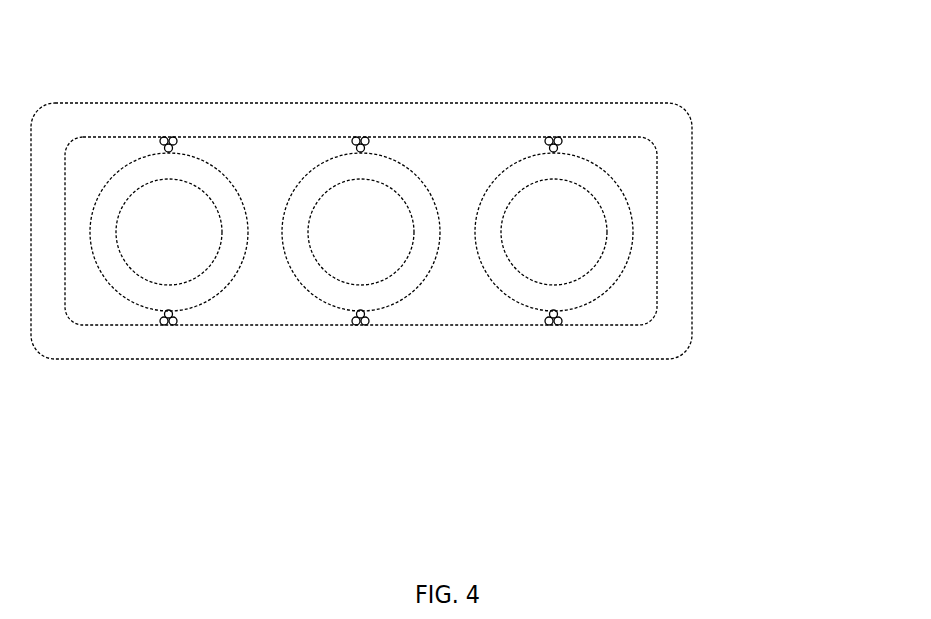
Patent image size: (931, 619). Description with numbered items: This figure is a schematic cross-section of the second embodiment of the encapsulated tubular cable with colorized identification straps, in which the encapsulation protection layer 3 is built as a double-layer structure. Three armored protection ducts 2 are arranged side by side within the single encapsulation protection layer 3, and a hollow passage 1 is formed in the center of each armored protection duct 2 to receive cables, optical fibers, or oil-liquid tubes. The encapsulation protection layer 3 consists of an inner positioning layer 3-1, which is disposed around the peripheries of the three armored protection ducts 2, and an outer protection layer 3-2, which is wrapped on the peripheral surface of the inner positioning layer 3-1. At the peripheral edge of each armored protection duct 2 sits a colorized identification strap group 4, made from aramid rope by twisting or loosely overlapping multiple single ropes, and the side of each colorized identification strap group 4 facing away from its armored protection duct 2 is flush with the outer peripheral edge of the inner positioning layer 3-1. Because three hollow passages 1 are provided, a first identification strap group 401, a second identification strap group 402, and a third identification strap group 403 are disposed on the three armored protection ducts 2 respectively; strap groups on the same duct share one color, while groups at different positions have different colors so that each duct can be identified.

The hollow passage 1 is at (578, 227).
The armored protection duct 2 is at (622, 205).
The encapsulation protection layer 3 is at (449, 187).
The inner positioning layer 3-1 is at (630, 172).
The outer protection layer 3-2 is at (610, 120).
The colorized identification strap group 4 is at (382, 350).
The first identification strap group 401 is at (172, 325).
The second identification strap group 402 is at (362, 325).
The third identification strap group 403 is at (572, 303).